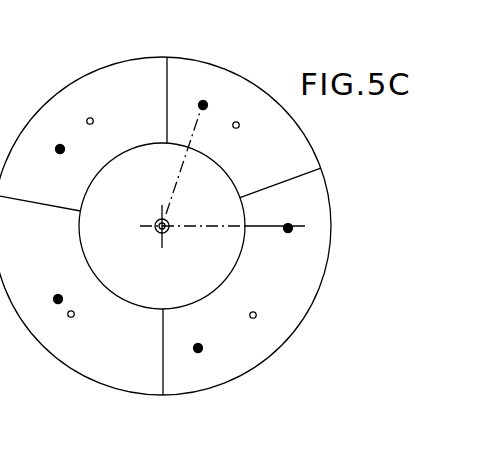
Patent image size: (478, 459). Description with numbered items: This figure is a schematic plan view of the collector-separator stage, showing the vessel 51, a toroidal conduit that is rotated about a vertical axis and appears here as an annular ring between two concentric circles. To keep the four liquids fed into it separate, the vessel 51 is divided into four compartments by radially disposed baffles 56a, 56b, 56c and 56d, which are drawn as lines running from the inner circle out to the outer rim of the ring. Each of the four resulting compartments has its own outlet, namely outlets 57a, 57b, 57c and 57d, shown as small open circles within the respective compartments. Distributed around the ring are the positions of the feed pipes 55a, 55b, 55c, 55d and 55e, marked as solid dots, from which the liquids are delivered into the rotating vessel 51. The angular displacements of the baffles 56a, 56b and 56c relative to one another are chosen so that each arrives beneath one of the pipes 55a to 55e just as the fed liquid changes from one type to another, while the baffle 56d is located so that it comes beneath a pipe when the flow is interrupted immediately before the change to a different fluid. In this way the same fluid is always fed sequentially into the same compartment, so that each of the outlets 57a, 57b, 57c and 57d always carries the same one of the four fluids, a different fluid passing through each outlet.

The vessel 51 is at (331, 232).
The pipe 55a is at (287, 225).
The pipe 55b is at (200, 104).
The pipe 55c is at (57, 150).
The pipe 55d is at (55, 296).
The pipe 55e is at (213, 340).
The baffle 56a is at (295, 176).
The baffle 56b is at (167, 75).
The baffle 56c is at (52, 206).
The baffle 56d is at (163, 357).
The outlet 57a is at (256, 313).
The outlet 57b is at (239, 127).
The outlet 57c is at (86, 120).
The outlet 57d is at (74, 316).